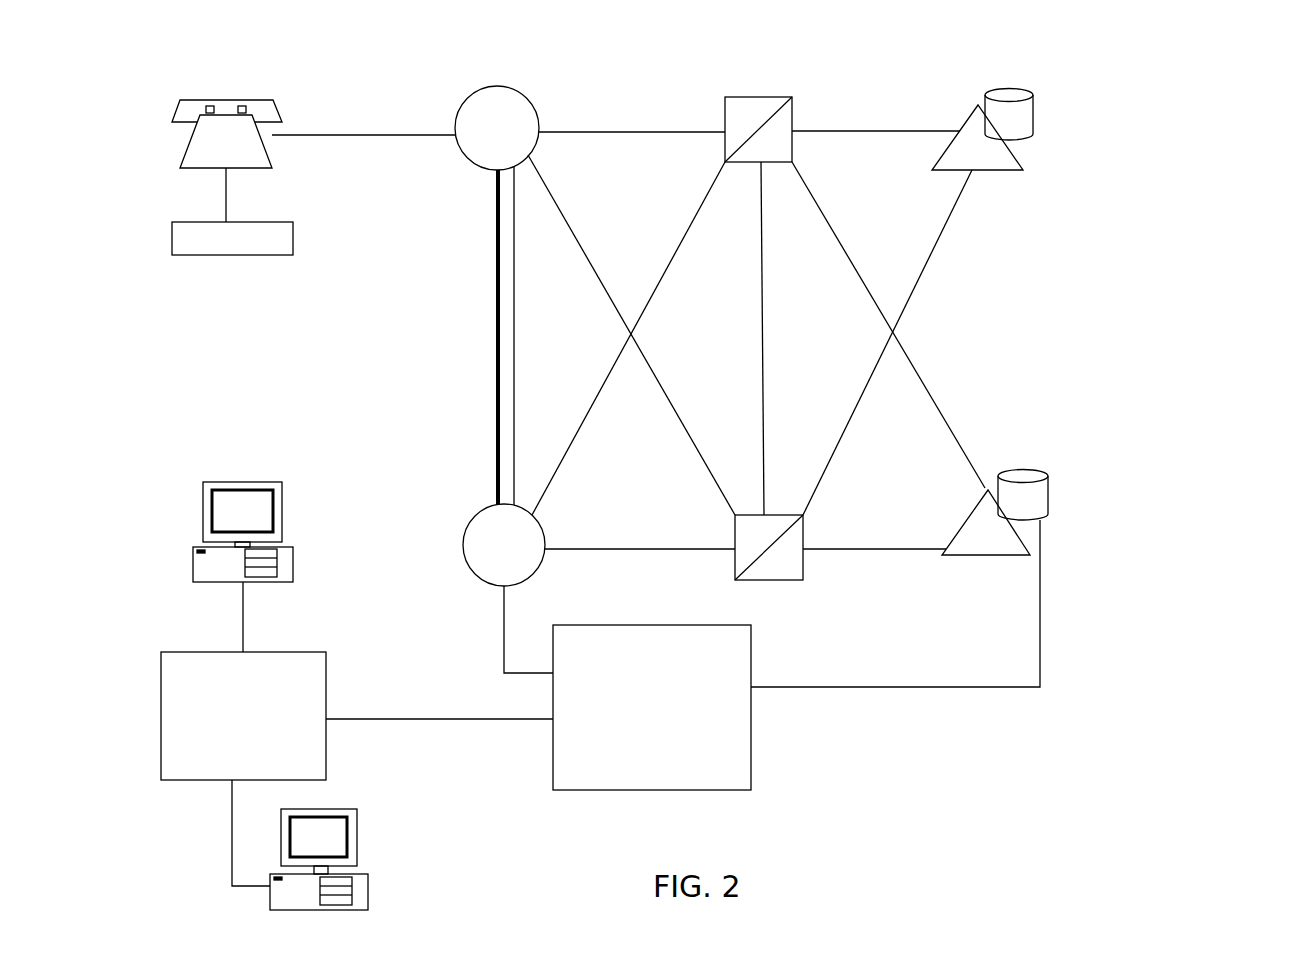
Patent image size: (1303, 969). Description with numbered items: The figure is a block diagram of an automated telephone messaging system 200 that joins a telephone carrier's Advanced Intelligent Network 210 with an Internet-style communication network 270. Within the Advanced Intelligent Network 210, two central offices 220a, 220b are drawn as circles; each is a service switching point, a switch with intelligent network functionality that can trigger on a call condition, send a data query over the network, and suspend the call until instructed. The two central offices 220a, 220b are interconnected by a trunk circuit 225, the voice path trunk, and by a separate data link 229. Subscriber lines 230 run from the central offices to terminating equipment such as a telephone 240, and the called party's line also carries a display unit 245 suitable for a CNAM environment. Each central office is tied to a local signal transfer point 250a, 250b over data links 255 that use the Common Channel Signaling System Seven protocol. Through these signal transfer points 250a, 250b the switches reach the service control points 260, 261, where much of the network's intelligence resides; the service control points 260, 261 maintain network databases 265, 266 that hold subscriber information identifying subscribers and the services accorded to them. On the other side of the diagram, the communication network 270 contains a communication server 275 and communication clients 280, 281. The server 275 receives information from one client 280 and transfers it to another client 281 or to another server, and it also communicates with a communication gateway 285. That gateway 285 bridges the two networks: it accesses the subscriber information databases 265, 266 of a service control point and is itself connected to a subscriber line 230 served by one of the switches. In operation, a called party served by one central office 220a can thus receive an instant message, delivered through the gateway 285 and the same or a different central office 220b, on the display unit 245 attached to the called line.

The automated telephone messaging system 200 is at (1230, 100).
The Advanced Intelligent Network 210 is at (1082, 333).
The central office 220a is at (500, 86).
The central office 220b is at (463, 545).
The trunk circuit 225 is at (497, 276).
The data link 229 is at (514, 210).
The subscriber line 230 is at (343, 137).
The telephone 240 is at (263, 100).
The display unit 245 is at (253, 255).
The signal transfer point 250a is at (770, 97).
The signal transfer point 250b is at (780, 580).
The data link 255 is at (590, 132).
The service control point 260 is at (977, 105).
The service control point 261 is at (970, 511).
The network database 265 is at (1033, 102).
The network database 266 is at (1048, 485).
The communication network 270 is at (1033, 764).
The communication server 275 is at (326, 757).
The communication client 280 is at (357, 845).
The communication client 281 is at (282, 500).
The communication gateway 285 is at (751, 770).